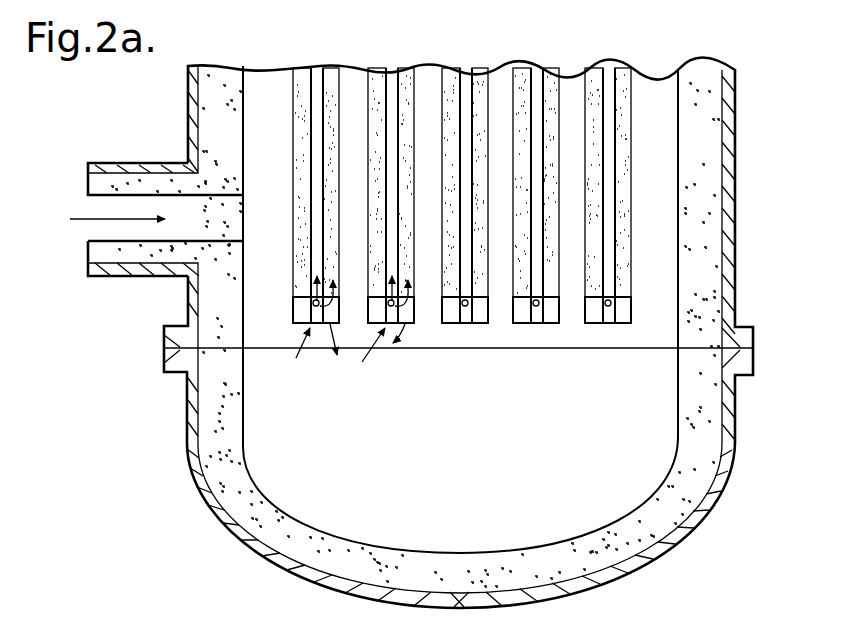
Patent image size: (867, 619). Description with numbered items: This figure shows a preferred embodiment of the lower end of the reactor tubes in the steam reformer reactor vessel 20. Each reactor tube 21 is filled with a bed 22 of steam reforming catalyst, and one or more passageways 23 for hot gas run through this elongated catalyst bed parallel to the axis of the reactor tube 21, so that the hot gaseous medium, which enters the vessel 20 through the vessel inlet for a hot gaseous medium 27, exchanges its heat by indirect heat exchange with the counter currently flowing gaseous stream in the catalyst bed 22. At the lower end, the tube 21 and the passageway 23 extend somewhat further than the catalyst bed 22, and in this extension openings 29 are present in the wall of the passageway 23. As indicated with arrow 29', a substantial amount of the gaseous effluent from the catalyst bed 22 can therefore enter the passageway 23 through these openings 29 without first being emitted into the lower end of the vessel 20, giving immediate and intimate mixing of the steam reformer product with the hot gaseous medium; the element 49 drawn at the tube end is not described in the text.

The reactor vessel 20 is at (740, 257).
The reactor tube 21 is at (631, 229).
The bed of steam reforming catalyst 22 is at (628, 200).
The passageway 23 is at (608, 165).
The vessel inlet for a hot gaseous medium 27 is at (127, 253).
The openings 29 is at (485, 235).
The arrow 29' is at (409, 235).
The tube end cap 49 is at (618, 312).